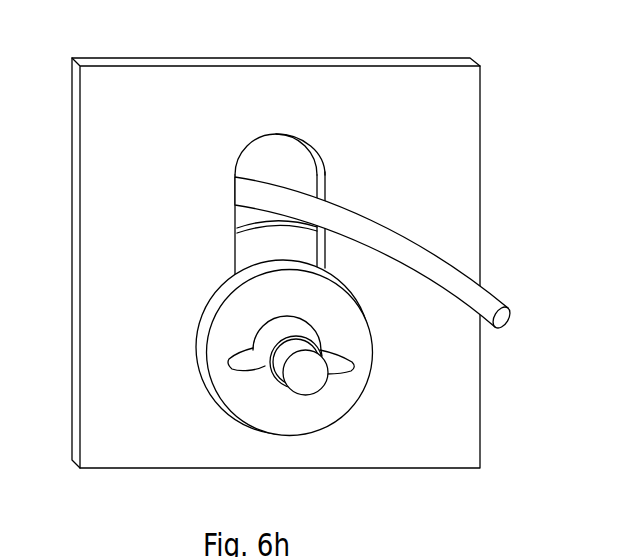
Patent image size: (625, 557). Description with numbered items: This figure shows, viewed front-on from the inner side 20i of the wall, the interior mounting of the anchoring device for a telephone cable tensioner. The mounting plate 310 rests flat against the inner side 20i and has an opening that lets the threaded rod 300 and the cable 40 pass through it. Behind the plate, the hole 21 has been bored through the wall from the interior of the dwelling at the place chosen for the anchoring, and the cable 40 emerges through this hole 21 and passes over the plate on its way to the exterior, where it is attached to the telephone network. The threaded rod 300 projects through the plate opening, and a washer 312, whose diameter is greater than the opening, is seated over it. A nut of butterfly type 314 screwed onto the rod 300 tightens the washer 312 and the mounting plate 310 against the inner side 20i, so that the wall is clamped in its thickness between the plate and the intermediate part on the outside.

The inner side of the wall 20i is at (42, 196).
The mounting plate 310 is at (342, 60).
The hole 21 is at (250, 247).
The cable 40 is at (494, 304).
The washer 312 is at (234, 407).
The nut of butterfly type 314 is at (260, 365).
The threaded rod 300 is at (310, 380).